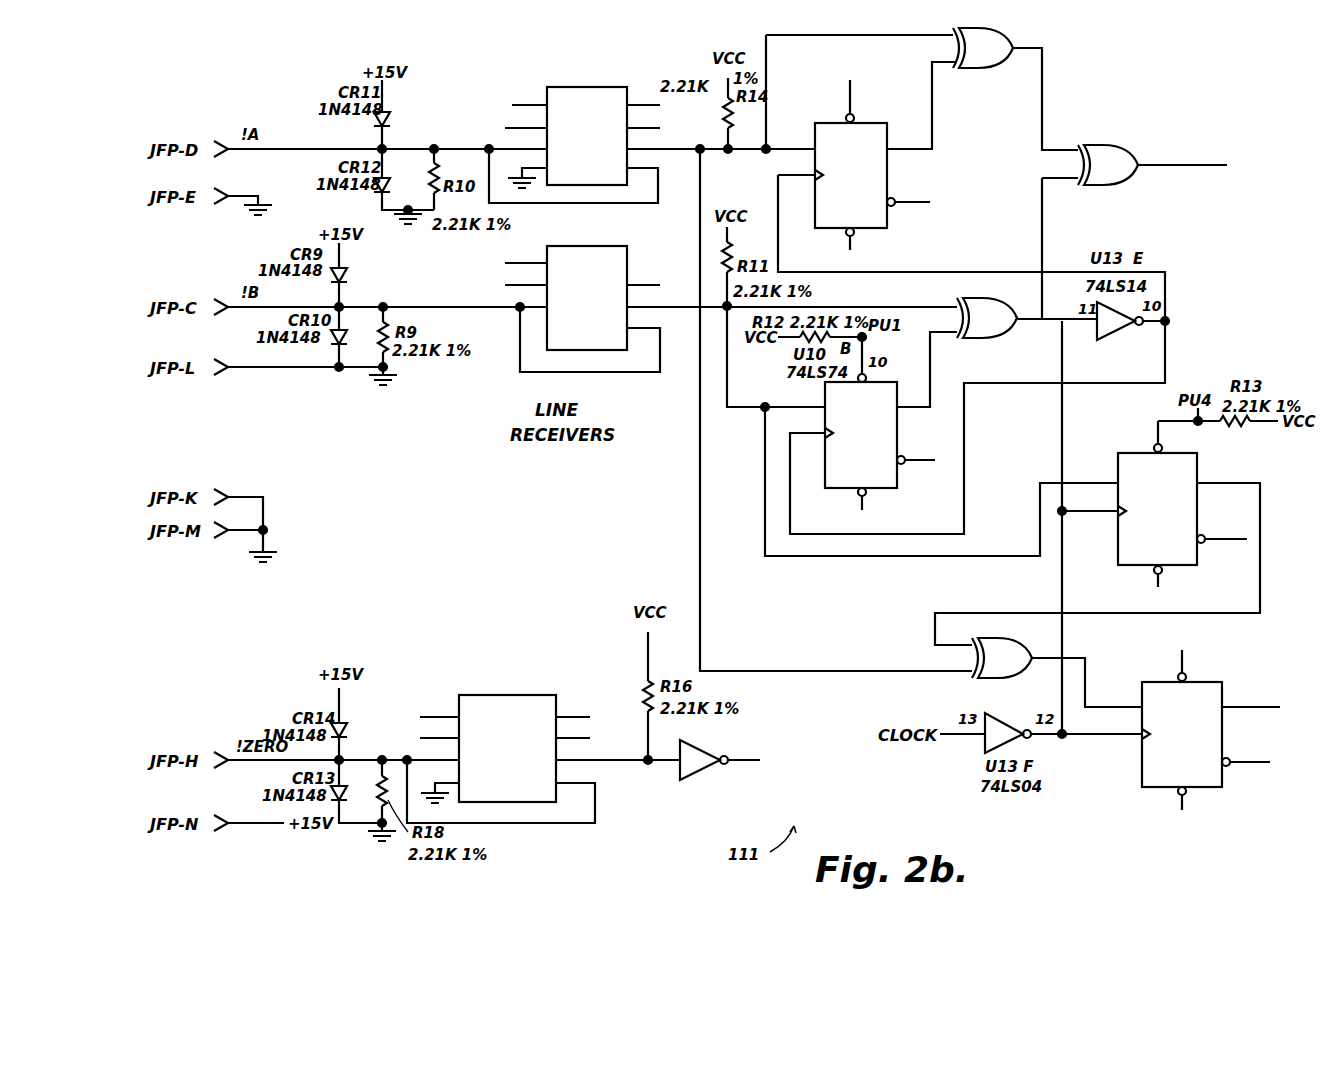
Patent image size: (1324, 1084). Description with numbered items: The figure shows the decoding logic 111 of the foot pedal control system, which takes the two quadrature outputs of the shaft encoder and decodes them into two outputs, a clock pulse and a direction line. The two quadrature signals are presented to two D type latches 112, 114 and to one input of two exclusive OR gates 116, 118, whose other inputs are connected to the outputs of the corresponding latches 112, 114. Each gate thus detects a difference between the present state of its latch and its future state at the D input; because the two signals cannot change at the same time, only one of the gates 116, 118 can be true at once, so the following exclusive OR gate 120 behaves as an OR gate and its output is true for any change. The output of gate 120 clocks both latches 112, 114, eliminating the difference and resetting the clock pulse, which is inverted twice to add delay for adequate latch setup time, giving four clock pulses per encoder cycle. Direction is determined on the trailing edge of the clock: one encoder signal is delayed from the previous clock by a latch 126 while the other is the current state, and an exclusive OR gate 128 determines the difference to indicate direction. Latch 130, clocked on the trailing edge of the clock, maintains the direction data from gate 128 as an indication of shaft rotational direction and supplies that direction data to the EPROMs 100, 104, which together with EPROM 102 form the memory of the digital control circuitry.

The EPROM 100 is at (607, 87).
The EPROM 102 is at (627, 251).
The EPROM 104 is at (549, 695).
The D type latch 112 is at (889, 163).
The D type latch 114 is at (899, 422).
The exclusive OR gate 116 is at (1000, 29).
The exclusive OR gate 118 is at (1004, 285).
The exclusive OR gate 120 is at (1110, 183).
The latch 126 is at (1197, 456).
The exclusive OR gate 128 is at (1000, 639).
The latch 130 is at (1215, 682).
The decoding logic 111 is at (745, 782).